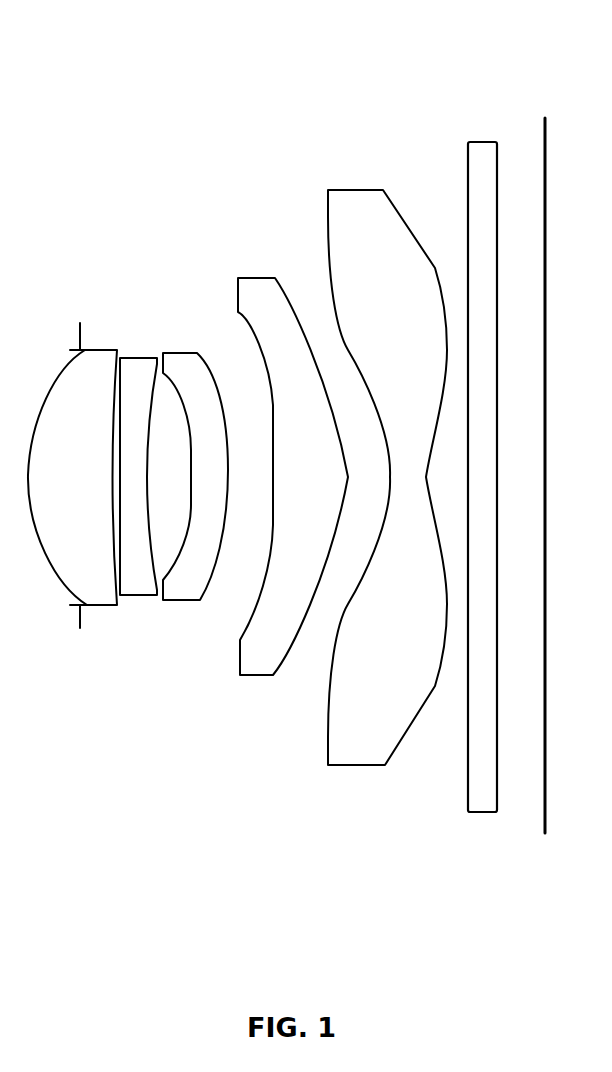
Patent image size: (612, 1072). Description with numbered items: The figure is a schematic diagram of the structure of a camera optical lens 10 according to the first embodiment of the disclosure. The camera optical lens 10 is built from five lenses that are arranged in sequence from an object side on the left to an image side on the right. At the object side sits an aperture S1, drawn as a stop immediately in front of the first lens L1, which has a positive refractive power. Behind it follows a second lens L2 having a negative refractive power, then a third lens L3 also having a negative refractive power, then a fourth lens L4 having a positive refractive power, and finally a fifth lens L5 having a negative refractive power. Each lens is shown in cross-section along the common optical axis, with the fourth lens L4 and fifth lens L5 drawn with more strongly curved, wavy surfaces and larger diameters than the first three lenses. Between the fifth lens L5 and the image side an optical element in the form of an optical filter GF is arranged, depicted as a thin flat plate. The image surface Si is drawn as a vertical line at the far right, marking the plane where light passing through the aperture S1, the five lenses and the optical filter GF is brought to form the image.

The camera optical lens 10 is at (307, 44).
The aperture S1 is at (85, 464).
The first lens L1 is at (72, 465).
The second lens L2 is at (138, 462).
The third lens L3 is at (195, 464).
The fourth lens L4 is at (293, 464).
The fifth lens L5 is at (387, 463).
The optical filter GF is at (484, 464).
The image surface Si is at (550, 463).